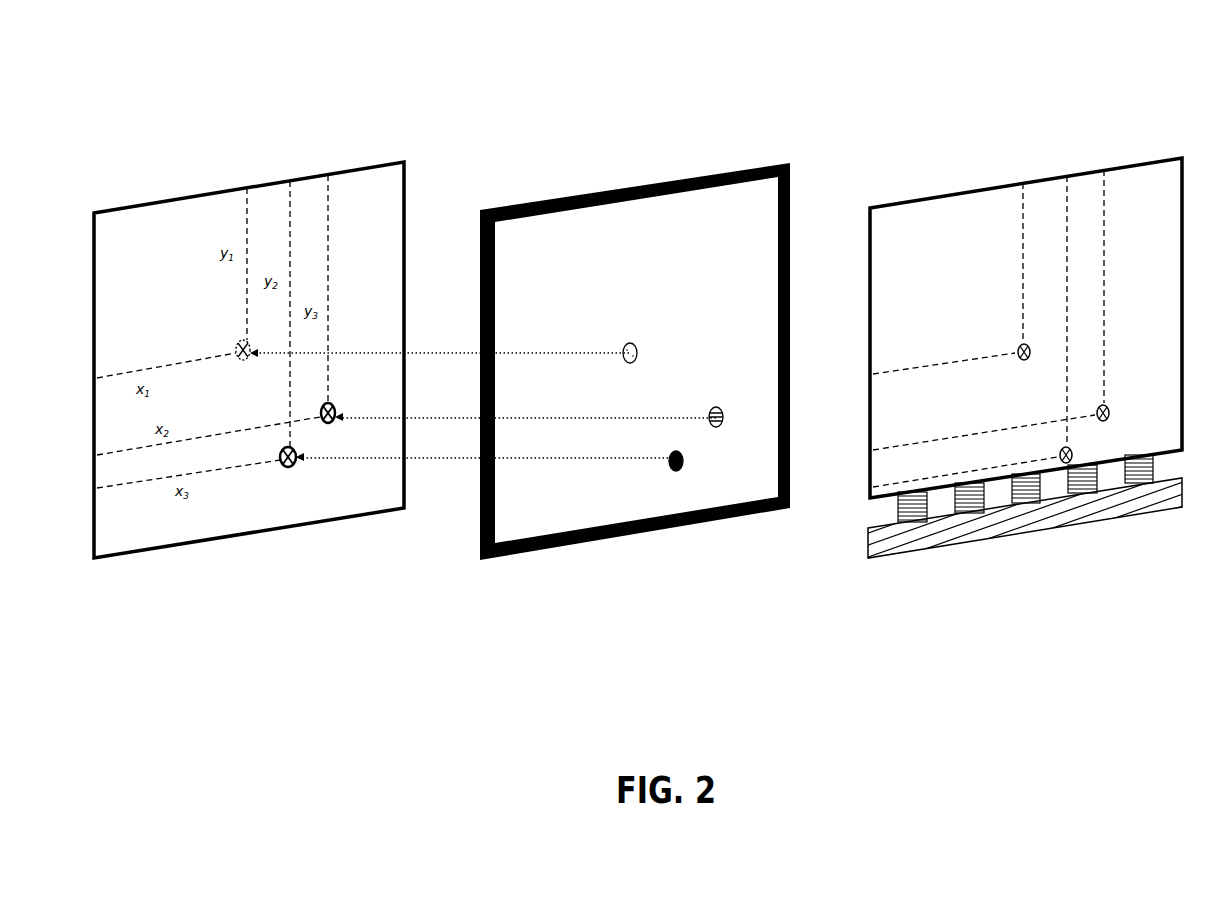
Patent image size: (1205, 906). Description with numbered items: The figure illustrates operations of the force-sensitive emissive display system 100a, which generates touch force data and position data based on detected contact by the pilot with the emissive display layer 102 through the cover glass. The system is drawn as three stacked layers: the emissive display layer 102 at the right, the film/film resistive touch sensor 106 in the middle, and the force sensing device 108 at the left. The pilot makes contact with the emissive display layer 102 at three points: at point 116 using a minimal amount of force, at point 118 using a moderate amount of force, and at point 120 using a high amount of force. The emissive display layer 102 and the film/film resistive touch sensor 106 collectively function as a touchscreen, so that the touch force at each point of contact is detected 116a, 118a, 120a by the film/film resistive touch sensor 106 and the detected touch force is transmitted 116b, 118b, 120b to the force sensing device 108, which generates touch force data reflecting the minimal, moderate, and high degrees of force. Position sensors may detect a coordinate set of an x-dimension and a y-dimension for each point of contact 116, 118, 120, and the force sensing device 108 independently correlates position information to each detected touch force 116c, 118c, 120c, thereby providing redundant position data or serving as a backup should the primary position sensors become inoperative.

The force-sensitive emissive display system 100a is at (162, 92).
The emissive display layer 102 is at (925, 198).
The film/film resistive touch sensor 106 is at (752, 163).
The force sensing device 108 is at (396, 162).
The point of contact 116 is at (1020, 345).
The point of contact 118 is at (1110, 409).
The point of contact 120 is at (1072, 454).
The detected touch force 116a is at (637, 348).
The detected touch force 118a is at (714, 407).
The detected touch force 120a is at (673, 473).
The transmitted touch force 116b is at (466, 352).
The transmitted touch force 118b is at (473, 416).
The transmitted touch force 120b is at (468, 457).
The correlated point of contact 116c is at (240, 342).
The correlated point of contact 118c is at (336, 409).
The correlated point of contact 120c is at (286, 469).